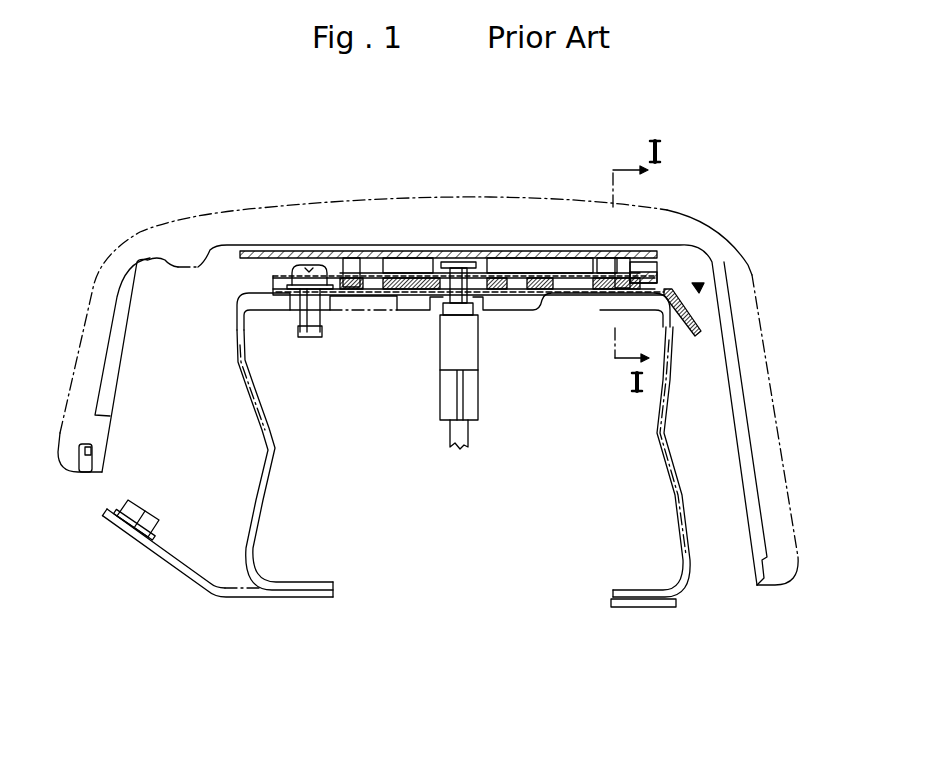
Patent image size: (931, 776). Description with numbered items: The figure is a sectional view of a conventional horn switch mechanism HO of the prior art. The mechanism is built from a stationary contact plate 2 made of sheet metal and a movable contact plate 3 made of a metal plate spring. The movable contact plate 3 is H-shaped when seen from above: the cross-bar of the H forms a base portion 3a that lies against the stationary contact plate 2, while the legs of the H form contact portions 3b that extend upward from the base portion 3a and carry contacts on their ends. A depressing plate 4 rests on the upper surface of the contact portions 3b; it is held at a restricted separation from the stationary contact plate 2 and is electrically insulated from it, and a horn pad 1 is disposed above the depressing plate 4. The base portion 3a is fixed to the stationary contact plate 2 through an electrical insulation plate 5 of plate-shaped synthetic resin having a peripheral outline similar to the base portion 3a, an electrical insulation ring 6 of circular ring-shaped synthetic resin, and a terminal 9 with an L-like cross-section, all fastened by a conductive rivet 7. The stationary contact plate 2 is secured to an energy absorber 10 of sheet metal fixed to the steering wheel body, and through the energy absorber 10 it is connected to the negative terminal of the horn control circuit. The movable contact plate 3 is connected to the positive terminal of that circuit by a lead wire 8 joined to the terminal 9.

The horn pad 1 is at (276, 233).
The stationary contact plate 2 is at (697, 320).
The movable contact plate 3 is at (540, 275).
The base portion 3a is at (520, 270).
The contact portions 3b is at (352, 268).
The depressing plate 4 is at (402, 267).
The electrical insulation plate 5 is at (537, 292).
The electrical insulation ring 6 is at (427, 305).
The rivet 7 is at (455, 272).
The lead wire 8 is at (462, 440).
The terminal 9 is at (452, 357).
The energy absorber 10 is at (270, 452).
The horn switch mechanism HO is at (700, 288).